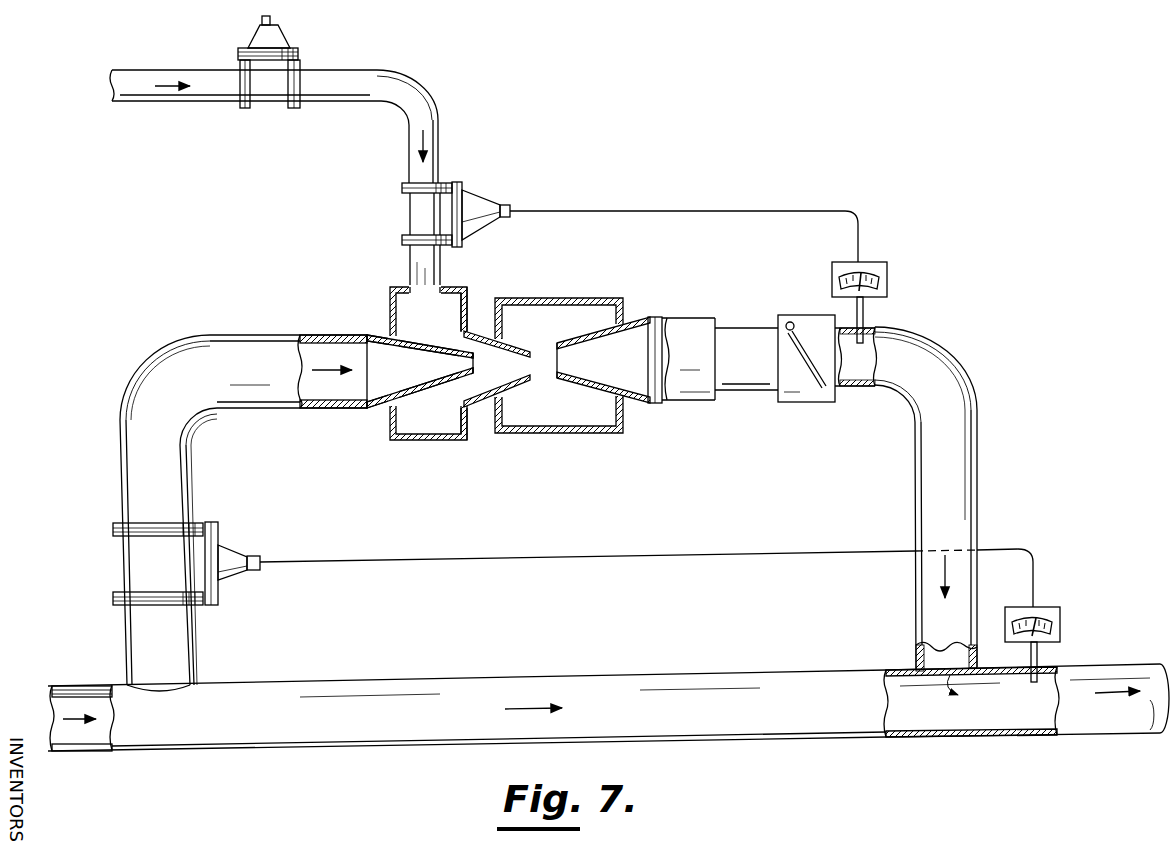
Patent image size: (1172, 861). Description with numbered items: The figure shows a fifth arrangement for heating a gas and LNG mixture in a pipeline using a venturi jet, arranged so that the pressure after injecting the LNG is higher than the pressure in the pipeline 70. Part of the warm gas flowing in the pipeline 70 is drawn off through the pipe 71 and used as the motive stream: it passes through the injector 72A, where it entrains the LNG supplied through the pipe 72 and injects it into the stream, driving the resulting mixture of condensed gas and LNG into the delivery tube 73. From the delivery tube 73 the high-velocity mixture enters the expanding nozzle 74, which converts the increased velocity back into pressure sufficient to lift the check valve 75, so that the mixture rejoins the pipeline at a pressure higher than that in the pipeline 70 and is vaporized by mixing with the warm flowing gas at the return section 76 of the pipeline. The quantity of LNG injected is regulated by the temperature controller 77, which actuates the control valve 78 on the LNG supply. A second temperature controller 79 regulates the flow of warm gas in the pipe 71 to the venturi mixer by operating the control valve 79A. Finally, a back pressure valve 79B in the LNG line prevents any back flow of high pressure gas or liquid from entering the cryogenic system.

The pipeline 70 is at (72, 697).
The pipe 71 is at (128, 483).
The pipe 72 is at (428, 283).
The injector 72A is at (413, 446).
The delivery tube 73 is at (535, 359).
The expanding nozzle 74 is at (632, 327).
The check valve 75 is at (812, 318).
The return tee section of main pipe 76 is at (985, 722).
The temperature controller 77 is at (888, 270).
The control valve 78 is at (478, 206).
The temperature controller 79 is at (1046, 606).
The control valve 79A is at (228, 545).
The back pressure valve 79B is at (260, 92).